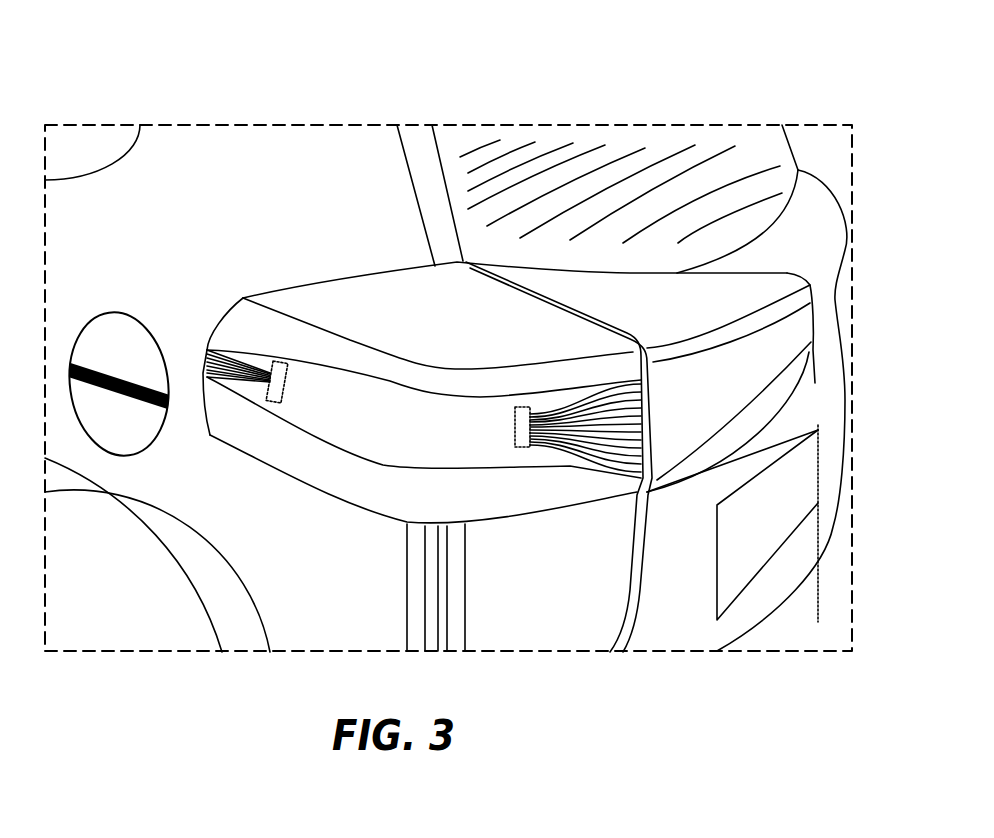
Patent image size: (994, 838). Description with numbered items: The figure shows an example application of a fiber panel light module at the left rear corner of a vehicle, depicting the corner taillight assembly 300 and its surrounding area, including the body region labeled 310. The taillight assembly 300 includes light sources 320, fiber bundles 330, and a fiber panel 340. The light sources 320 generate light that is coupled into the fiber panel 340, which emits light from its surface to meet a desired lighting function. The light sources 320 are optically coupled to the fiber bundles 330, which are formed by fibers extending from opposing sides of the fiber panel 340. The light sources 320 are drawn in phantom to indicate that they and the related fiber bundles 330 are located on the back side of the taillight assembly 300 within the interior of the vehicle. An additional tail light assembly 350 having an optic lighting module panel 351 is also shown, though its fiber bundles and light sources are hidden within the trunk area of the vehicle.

The taillight assembly 300 is at (114, 68).
The upper body panel 310 is at (330, 352).
The light sources 320 is at (288, 373).
The fiber bundles 330 is at (207, 351).
The fiber panel 340 is at (410, 446).
The tail light assembly 350 is at (670, 490).
The optic lighting module panel 351 is at (734, 406).